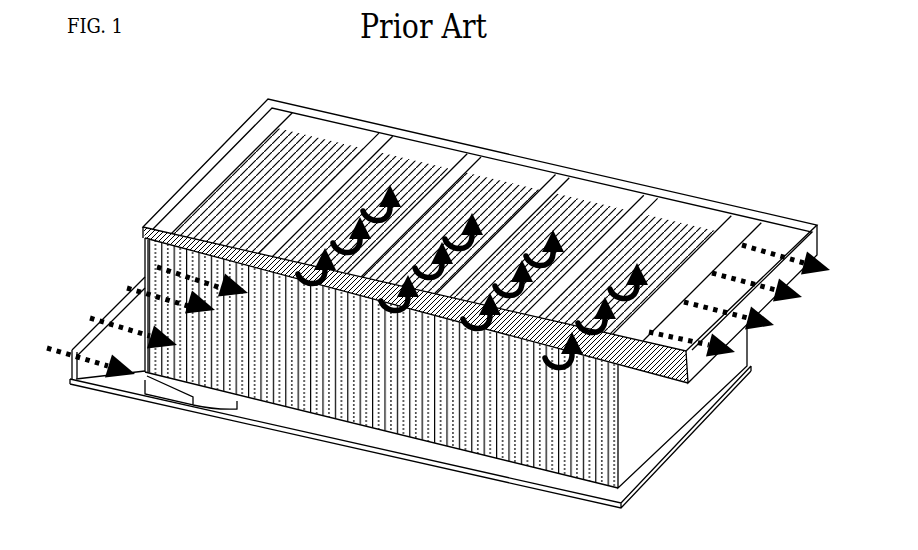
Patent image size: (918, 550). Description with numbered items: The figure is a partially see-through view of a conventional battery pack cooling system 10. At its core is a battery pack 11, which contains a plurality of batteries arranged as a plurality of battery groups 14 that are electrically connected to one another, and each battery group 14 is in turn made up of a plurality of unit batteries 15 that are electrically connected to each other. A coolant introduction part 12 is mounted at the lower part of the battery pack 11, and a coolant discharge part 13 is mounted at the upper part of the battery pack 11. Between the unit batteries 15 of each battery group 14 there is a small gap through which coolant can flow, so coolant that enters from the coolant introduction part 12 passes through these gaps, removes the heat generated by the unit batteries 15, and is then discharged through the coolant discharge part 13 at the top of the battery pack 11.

The battery pack cooling system 10 is at (93, 132).
The battery pack 11 is at (658, 428).
The coolant introduction part 12 is at (80, 381).
The coolant discharge part 13 is at (763, 219).
The battery group 14 is at (168, 398).
The unit battery 15 is at (417, 407).